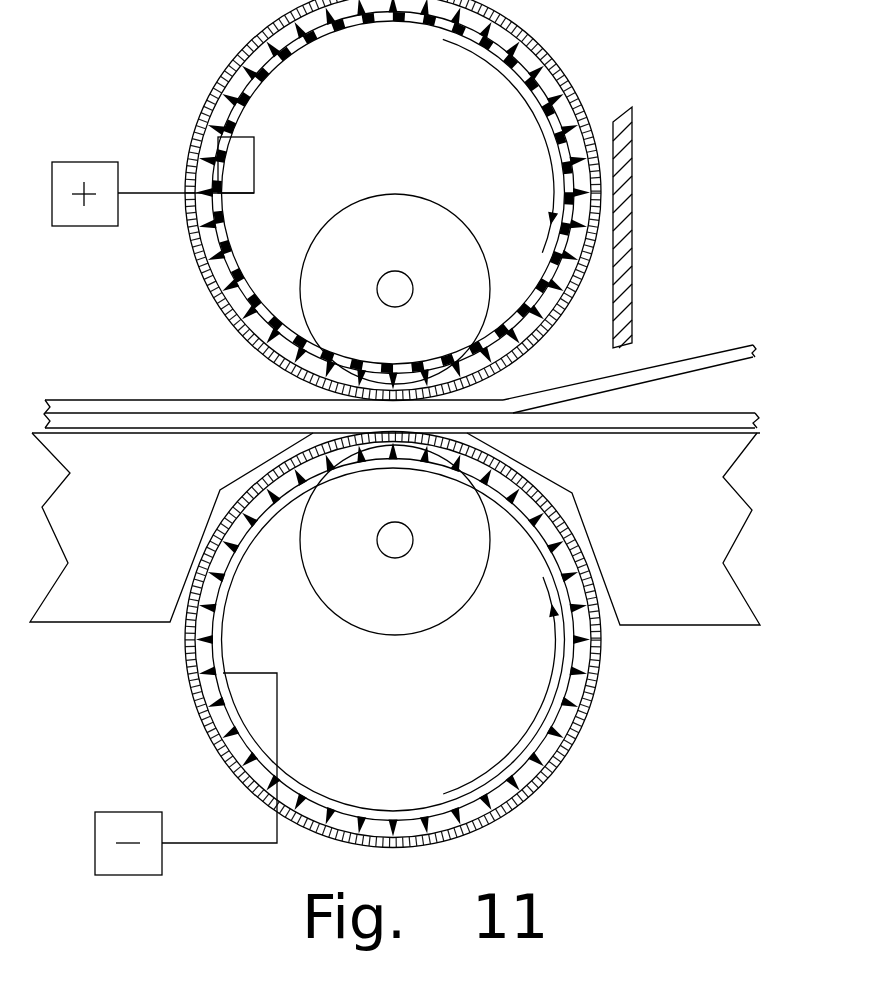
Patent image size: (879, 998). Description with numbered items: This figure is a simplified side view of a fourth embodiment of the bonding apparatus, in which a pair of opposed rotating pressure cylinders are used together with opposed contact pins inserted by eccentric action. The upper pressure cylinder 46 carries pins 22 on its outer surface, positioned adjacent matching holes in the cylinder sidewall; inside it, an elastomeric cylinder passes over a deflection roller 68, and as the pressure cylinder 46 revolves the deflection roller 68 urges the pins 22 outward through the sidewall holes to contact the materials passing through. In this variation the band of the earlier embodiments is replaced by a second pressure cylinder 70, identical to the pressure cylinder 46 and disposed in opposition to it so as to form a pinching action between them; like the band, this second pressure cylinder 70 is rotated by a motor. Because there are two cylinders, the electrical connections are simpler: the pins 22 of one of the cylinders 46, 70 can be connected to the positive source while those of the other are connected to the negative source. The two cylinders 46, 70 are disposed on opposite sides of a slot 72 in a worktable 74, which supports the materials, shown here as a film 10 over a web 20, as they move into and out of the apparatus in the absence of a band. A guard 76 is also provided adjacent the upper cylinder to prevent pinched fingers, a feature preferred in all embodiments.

The film 10 is at (675, 367).
The web 20 is at (698, 417).
The pins 22 is at (230, 93).
The pressure cylinder 46 is at (230, 67).
The deflection roller 68 is at (423, 228).
The second pressure cylinder 70 is at (540, 780).
The slot 72 is at (345, 430).
The worktable 74 is at (117, 590).
The guard 76 is at (632, 180).